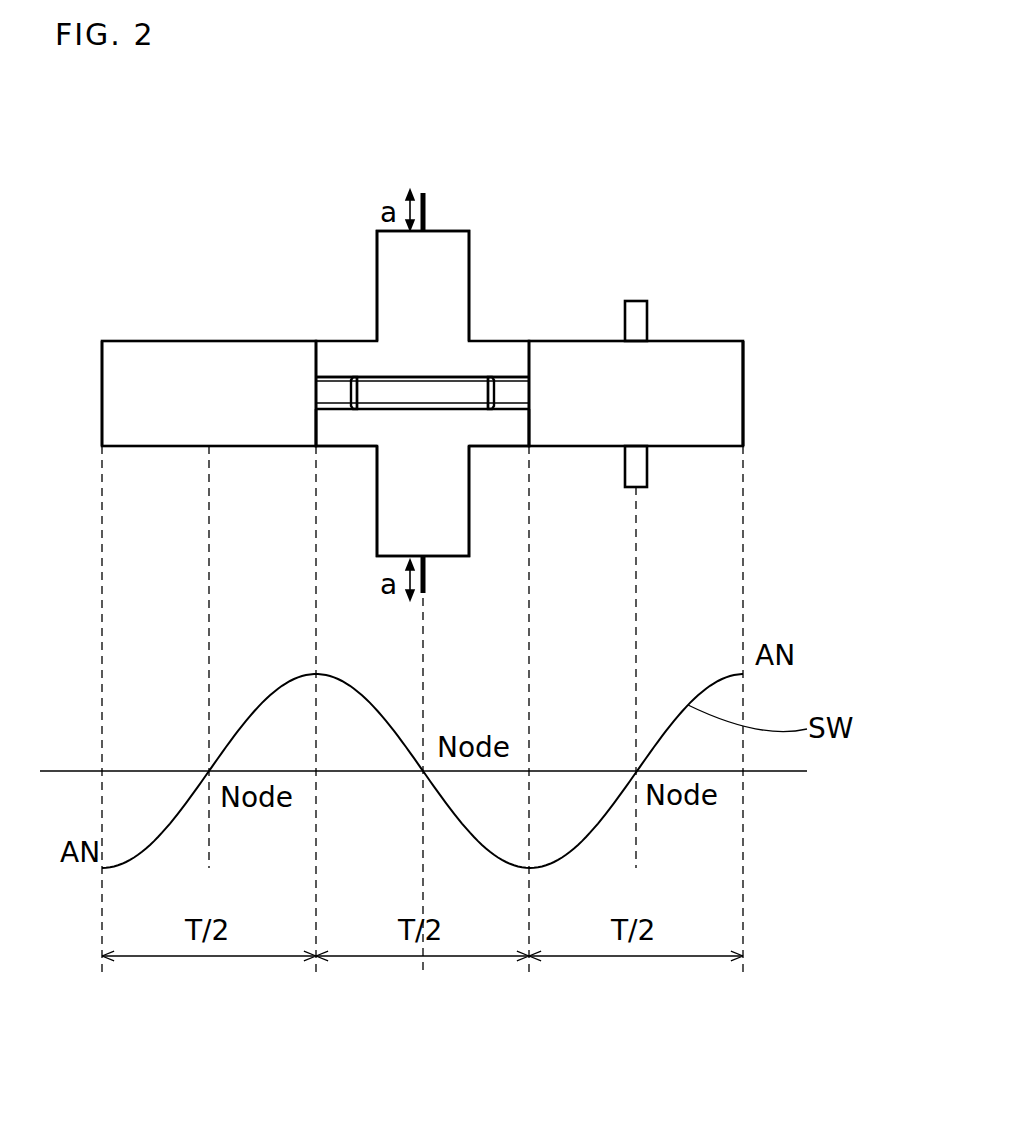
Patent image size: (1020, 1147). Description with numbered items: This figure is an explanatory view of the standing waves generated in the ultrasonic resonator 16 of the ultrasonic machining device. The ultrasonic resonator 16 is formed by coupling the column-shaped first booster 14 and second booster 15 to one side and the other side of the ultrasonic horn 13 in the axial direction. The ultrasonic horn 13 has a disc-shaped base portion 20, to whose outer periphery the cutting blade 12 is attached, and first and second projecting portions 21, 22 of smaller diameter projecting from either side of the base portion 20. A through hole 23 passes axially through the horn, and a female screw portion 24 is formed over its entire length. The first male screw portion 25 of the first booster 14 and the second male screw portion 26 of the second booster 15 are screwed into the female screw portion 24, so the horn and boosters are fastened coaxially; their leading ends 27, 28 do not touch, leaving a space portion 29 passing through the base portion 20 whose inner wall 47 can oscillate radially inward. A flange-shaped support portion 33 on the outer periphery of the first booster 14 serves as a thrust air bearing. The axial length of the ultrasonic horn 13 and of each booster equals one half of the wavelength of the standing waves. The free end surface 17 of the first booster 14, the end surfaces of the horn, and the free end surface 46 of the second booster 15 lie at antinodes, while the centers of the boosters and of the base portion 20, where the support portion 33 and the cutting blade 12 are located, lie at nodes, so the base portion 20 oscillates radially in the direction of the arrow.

The cutting blade 12 is at (423, 192).
The ultrasonic horn 13 is at (487, 228).
The first booster 14 is at (711, 348).
The second booster 15 is at (135, 348).
The ultrasonic resonator 16 is at (777, 420).
The free end surface 17 is at (743, 377).
The base portion 20 is at (449, 243).
The first projecting portion 21 is at (497, 435).
The second projecting portion 22 is at (347, 435).
The through hole 23 is at (470, 375).
The female screw portion 24 is at (377, 380).
The first male screw portion 25 is at (505, 398).
The second male screw portion 26 is at (340, 398).
The leading end of first male screw portion 27 is at (476, 395).
The leading end of second male screw portion 28 is at (370, 395).
The space portion 29 is at (412, 393).
The support portion 33 is at (636, 308).
The free end surface 46 is at (102, 377).
The inner wall 47 is at (437, 378).